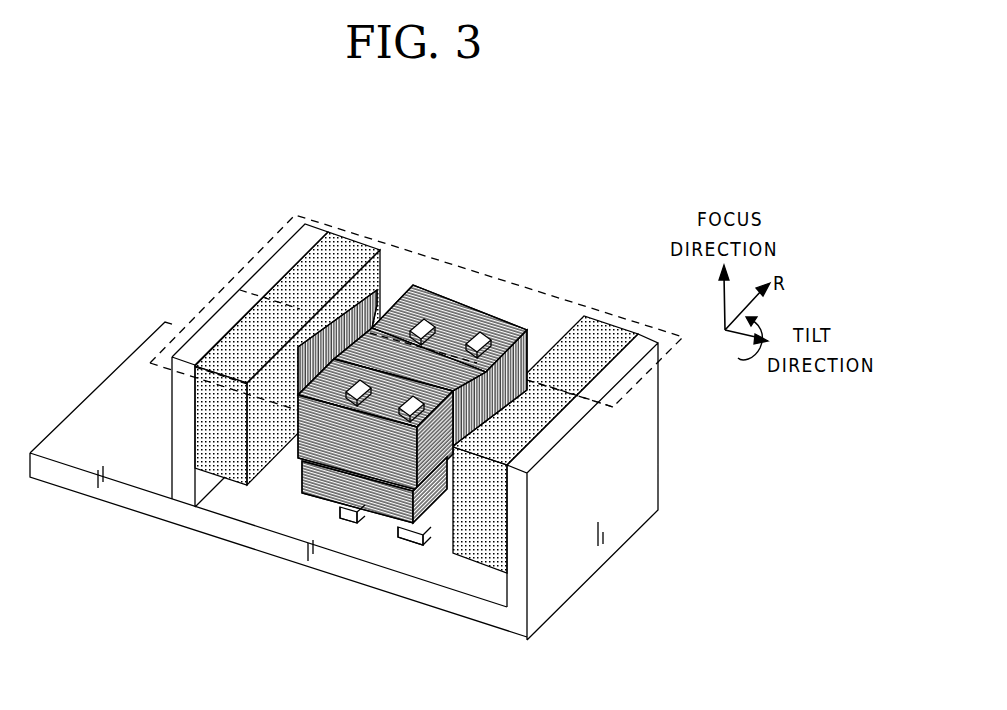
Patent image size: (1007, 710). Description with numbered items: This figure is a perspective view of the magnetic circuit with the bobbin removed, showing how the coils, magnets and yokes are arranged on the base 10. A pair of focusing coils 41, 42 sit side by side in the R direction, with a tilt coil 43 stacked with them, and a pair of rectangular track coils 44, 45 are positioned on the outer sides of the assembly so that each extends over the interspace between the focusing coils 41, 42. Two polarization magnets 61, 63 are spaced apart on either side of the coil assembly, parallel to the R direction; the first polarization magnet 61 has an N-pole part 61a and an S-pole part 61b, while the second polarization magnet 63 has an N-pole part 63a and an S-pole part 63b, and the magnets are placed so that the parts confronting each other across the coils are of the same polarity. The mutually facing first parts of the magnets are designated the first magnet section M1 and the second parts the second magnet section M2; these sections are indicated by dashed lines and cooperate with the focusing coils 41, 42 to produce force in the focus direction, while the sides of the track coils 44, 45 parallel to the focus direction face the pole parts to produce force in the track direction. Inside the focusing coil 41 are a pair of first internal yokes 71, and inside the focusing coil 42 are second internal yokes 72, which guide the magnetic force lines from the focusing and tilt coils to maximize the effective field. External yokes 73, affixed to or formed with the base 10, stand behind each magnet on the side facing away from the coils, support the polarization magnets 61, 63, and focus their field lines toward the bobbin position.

The base 10 is at (93, 420).
The external yoke 73 is at (182, 468).
The second polarization magnet 63 is at (103, 267).
The N-pole part 63a is at (295, 272).
The S-pole part 63b is at (232, 350).
The first polarization magnet 61 is at (652, 224).
The N-pole part 61a is at (597, 337).
The S-pole part 61b is at (527, 380).
The focusing coil 41 is at (472, 313).
The focusing coil 42 is at (333, 435).
The tilt coil 43 is at (377, 480).
The track coil 44 is at (510, 363).
The track coil 45 is at (352, 310).
The first internal yoke 71 is at (417, 327).
The second internal yoke 72 is at (327, 390).
The first magnet section M1 is at (652, 368).
The second magnet section M2 is at (507, 482).